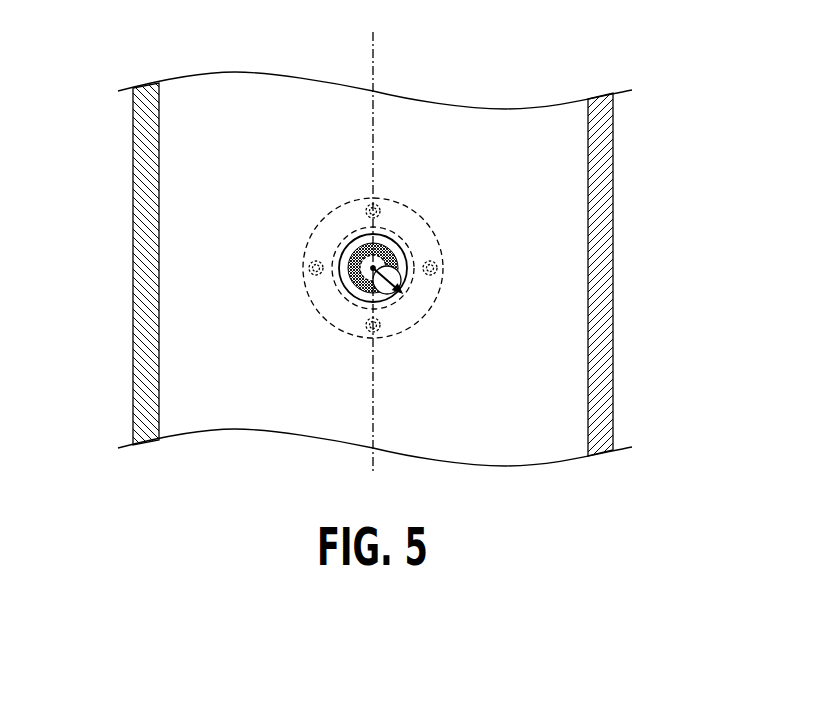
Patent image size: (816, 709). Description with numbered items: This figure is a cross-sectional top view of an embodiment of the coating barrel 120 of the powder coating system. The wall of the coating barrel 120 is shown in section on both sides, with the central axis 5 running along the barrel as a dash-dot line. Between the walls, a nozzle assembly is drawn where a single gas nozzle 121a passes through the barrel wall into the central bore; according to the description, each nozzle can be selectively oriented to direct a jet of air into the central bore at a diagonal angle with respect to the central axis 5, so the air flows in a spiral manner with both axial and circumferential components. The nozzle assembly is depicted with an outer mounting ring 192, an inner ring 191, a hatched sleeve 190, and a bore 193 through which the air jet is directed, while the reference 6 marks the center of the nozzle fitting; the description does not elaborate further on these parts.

The central axis 5 is at (372, 52).
The detail view reference (center of fitting) 6 is at (372, 268).
The coating barrel 120 is at (614, 157).
The inner surface of pipe wall 121a is at (316, 340).
The sealing ring / sleeve 190 is at (398, 260).
The inner ring of fitting 191 is at (333, 295).
The outer flange with bolts 192 is at (303, 255).
The bore / opening 193 is at (400, 283).